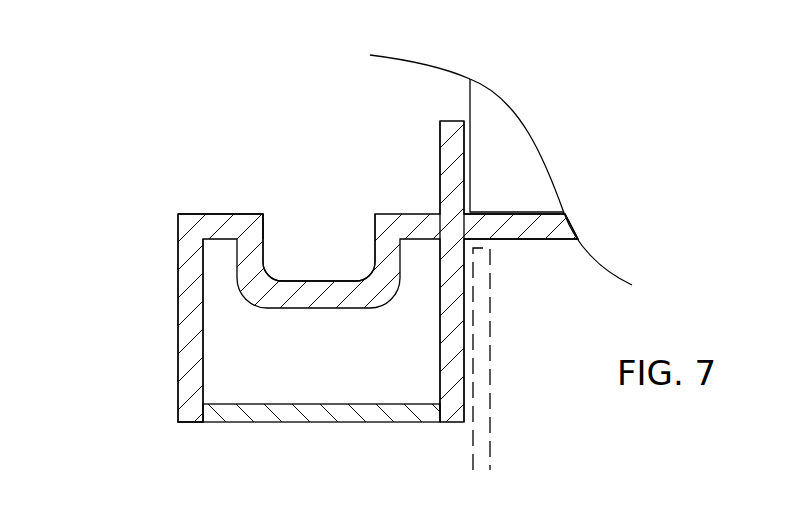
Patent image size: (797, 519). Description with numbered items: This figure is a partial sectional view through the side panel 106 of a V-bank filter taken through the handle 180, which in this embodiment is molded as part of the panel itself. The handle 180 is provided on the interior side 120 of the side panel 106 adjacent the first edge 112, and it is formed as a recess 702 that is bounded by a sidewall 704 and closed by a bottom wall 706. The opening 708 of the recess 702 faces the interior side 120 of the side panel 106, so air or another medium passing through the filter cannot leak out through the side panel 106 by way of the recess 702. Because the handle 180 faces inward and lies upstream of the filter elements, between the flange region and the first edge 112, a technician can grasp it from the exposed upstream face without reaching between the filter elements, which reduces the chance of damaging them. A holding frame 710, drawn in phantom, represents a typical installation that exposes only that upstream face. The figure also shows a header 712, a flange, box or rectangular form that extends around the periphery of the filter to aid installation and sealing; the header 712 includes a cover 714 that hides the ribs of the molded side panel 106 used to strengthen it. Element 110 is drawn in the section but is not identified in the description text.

The side panel 106 is at (522, 242).
The panel 110 is at (512, 147).
The first edge 112 is at (178, 264).
The interior side 120 is at (209, 212).
The handle 180 is at (266, 221).
The recess 702 is at (312, 250).
The sidewall 704 is at (264, 260).
The bottom wall 706 is at (334, 281).
The opening 708 is at (332, 211).
The holding frame 710 is at (490, 444).
The header 712 is at (176, 390).
The cover 714 is at (262, 422).